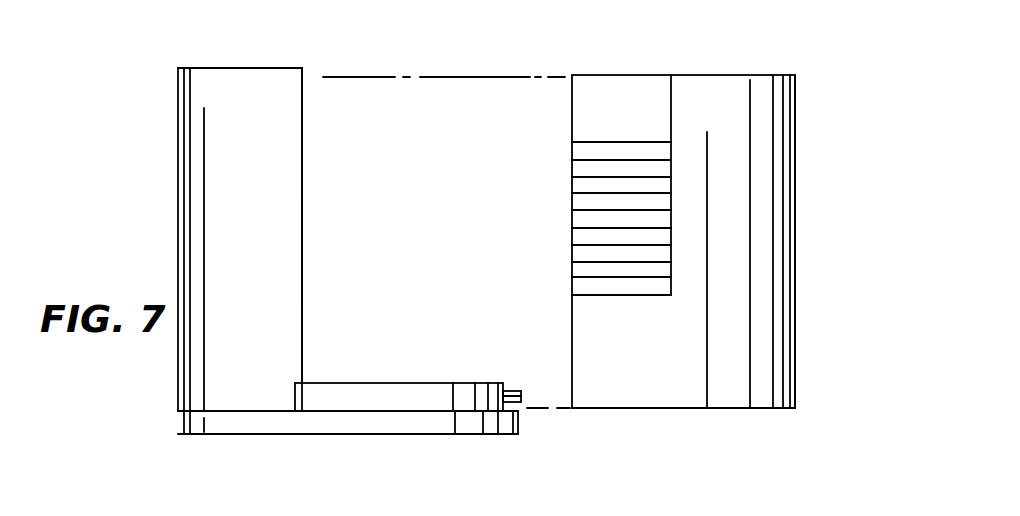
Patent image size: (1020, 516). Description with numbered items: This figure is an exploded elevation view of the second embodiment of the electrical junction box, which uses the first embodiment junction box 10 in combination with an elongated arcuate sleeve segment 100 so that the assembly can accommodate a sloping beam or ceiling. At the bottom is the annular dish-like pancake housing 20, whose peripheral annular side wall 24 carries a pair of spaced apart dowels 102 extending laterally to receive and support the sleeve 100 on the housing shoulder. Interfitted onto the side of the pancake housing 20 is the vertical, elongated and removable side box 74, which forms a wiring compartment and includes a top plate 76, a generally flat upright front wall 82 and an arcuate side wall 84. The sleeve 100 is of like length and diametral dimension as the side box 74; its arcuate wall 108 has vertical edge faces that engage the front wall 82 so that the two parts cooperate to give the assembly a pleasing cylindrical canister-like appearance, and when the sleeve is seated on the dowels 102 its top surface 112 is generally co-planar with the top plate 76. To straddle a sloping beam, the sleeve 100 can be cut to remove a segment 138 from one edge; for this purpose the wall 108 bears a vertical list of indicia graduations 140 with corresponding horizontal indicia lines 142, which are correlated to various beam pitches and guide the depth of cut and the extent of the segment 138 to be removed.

The electrical junction box 10 is at (146, 206).
The pancake housing 20 is at (334, 397).
The annular side wall 24 is at (510, 390).
The side box 74 is at (296, 88).
The top plate 76 is at (256, 68).
The front wall 82 is at (303, 243).
The arcuate side wall 84 is at (266, 250).
The arcuate sleeve segment 100 is at (766, 272).
The dowels 102 is at (521, 400).
The arcuate wall 108 is at (692, 377).
The top surface 112 is at (765, 74).
The segment 138 is at (627, 75).
The indicia graduations 140 is at (698, 194).
The horizontal indicia lines 142 is at (612, 296).